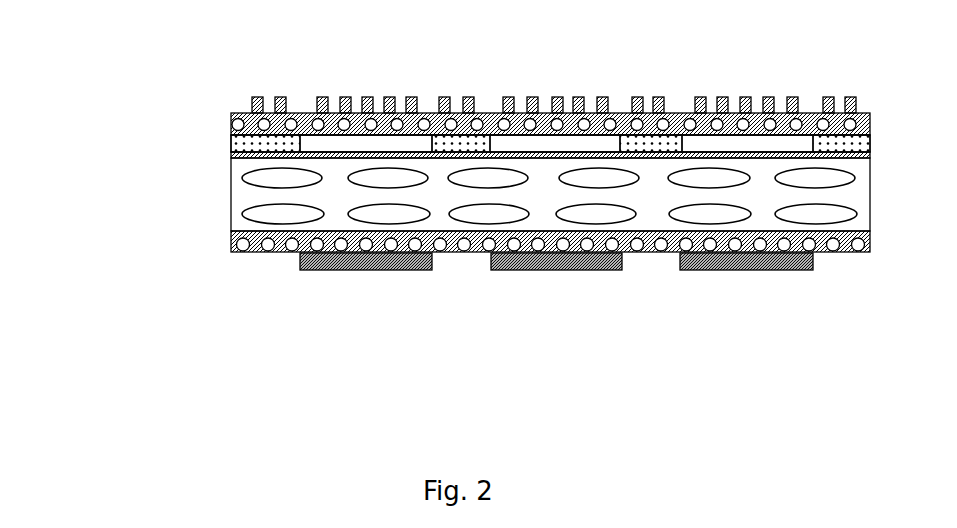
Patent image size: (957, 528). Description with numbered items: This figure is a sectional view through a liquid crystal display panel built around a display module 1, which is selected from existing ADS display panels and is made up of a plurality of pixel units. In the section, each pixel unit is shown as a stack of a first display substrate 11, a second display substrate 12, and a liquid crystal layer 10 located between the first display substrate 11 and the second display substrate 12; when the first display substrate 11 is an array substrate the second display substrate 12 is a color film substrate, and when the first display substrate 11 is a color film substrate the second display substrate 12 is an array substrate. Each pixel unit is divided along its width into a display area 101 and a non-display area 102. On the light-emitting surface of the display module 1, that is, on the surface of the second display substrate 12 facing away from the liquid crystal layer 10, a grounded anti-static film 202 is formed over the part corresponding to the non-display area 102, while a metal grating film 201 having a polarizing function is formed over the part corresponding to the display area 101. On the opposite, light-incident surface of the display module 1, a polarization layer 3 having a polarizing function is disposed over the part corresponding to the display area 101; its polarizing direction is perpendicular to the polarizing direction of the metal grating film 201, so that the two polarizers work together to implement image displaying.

The display module 1 is at (97, 100).
The polarization layer 3 is at (350, 265).
The liquid crystal layer 10 is at (243, 193).
The first display substrate 11 is at (233, 247).
The second display substrate 12 is at (242, 148).
The display area 101 is at (400, 140).
The non-display area 102 is at (265, 138).
The metal grating film 201 is at (415, 88).
The anti-static film 202 is at (283, 98).